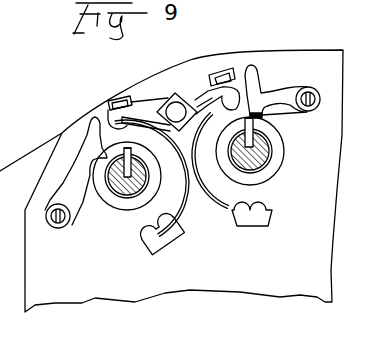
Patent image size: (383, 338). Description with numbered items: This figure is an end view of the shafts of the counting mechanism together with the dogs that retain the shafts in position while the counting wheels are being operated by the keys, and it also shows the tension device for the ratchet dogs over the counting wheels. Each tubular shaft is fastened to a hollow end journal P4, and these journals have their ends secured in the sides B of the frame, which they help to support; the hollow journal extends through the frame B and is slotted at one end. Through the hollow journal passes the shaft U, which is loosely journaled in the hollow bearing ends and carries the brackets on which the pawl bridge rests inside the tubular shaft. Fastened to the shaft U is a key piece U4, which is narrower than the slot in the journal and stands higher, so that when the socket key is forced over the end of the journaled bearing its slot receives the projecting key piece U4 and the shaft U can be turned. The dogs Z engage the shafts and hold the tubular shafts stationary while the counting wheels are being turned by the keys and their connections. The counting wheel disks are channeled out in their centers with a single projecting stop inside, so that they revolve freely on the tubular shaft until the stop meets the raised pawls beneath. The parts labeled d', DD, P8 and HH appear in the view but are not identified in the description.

The frame side B is at (334, 214).
The dog Z is at (92, 148).
The latch block d' is at (167, 82).
The pivot block DD is at (167, 95).
The shaft U is at (114, 194).
The key piece U4 is at (131, 150).
The hollow end journal P4 is at (299, 157).
The rod P8 is at (296, 128).
The guide rail HH is at (207, 198).